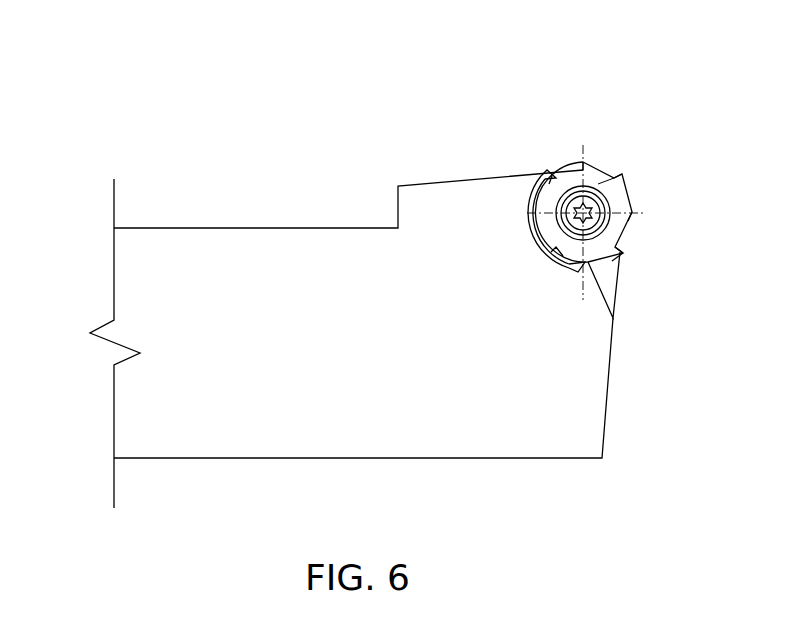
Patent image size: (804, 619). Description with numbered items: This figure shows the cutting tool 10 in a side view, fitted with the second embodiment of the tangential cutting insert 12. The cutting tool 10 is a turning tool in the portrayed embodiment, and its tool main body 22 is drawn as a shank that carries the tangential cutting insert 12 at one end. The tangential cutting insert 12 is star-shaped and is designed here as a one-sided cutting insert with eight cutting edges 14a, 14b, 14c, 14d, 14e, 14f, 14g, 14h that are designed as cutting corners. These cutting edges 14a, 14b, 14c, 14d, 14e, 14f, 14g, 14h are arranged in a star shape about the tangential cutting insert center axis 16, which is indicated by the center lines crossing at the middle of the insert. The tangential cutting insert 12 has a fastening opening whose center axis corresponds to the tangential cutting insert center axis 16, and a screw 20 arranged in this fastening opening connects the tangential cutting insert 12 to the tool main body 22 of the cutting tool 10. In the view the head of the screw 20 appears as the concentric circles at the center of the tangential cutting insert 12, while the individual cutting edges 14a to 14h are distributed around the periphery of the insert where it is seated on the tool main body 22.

The cutting tool 10 is at (297, 104).
The tangential cutting insert 12 is at (616, 168).
The cutting edge 14a is at (540, 181).
The cutting edge 14b is at (523, 217).
The cutting edge 14c is at (540, 263).
The cutting edge 14d is at (580, 292).
The cutting edge 14e is at (623, 254).
The cutting edge 14f is at (634, 206).
The cutting edge 14g is at (622, 175).
The cutting edge 14h is at (583, 166).
The tangential cutting insert center axis 16 is at (608, 276).
The screw 20 is at (571, 168).
The tool main body 22 is at (183, 260).